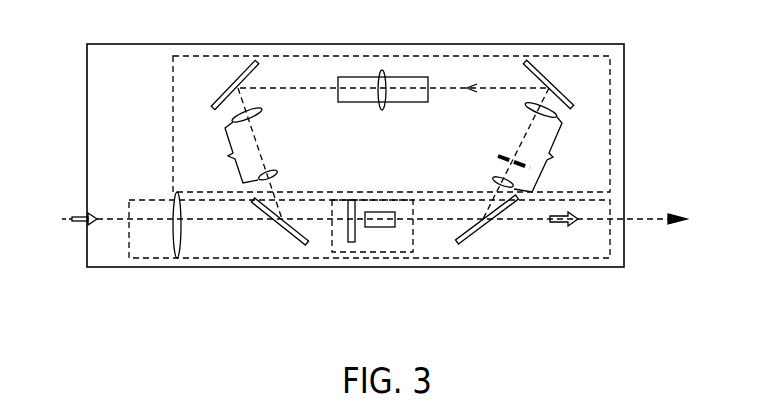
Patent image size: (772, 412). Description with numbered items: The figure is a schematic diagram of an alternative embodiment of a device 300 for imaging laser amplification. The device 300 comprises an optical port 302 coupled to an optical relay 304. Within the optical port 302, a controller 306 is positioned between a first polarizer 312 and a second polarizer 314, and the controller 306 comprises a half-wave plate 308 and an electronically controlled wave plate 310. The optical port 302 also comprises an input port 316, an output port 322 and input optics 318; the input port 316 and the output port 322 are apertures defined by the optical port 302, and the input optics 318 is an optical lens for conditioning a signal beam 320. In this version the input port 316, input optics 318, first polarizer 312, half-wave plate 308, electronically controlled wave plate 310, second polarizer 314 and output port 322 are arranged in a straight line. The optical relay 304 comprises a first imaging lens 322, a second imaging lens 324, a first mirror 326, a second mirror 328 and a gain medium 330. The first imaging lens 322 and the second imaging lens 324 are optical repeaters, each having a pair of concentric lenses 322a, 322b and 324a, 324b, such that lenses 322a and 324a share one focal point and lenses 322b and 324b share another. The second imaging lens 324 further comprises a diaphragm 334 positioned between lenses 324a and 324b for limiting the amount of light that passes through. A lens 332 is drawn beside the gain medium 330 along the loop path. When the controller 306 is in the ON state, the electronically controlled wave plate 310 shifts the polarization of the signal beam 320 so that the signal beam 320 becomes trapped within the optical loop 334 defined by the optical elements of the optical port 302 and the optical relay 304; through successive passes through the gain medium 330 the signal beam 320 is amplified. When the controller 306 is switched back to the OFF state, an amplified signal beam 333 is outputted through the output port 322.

The device 300 is at (104, 95).
The optical port 302 is at (588, 268).
The optical relay 304 is at (503, 56).
The controller 306 is at (337, 252).
The half-wave plate 308 is at (351, 243).
The electronically controlled wave plate 310 is at (398, 233).
The first polarizer 312 is at (298, 245).
The second polarizer 314 is at (478, 248).
The input port 316 is at (82, 224).
The input optics 318 is at (176, 262).
The signal beam 320 is at (84, 217).
The first imaging lens 322 is at (613, 220).
The lens 322a is at (262, 111).
The lens 322b is at (278, 175).
The second imaging lens 324 is at (543, 154).
The lens 324a is at (553, 117).
The lens 324b is at (496, 182).
The first mirror 326 is at (565, 92).
The second mirror 328 is at (240, 85).
The gain medium 330 is at (416, 80).
The lens 332 is at (378, 76).
The amplified signal beam 333 is at (688, 217).
The optical loop 334 is at (442, 85).